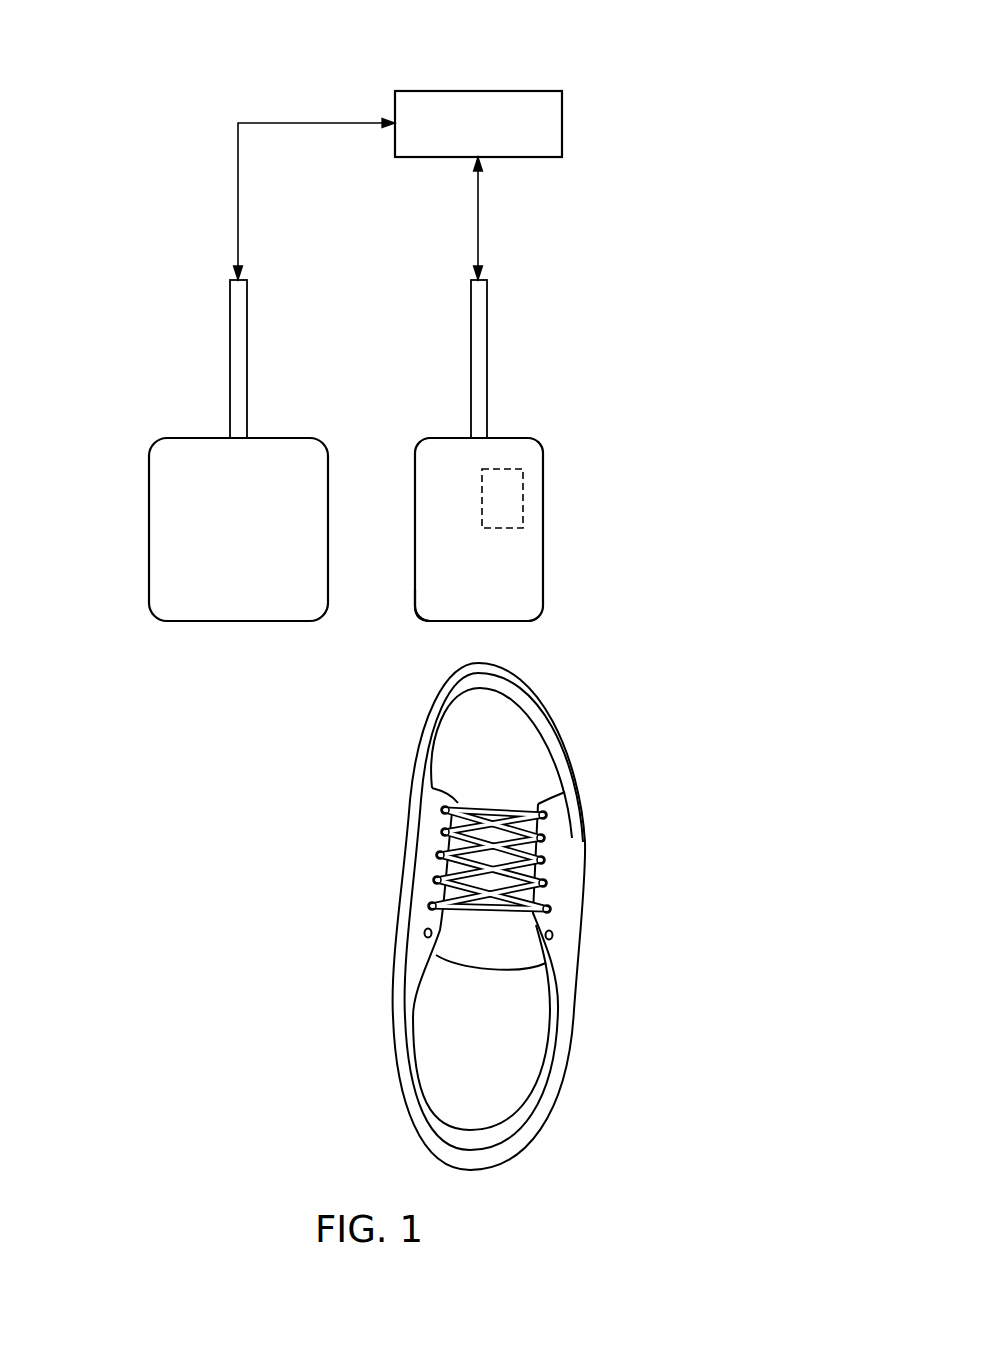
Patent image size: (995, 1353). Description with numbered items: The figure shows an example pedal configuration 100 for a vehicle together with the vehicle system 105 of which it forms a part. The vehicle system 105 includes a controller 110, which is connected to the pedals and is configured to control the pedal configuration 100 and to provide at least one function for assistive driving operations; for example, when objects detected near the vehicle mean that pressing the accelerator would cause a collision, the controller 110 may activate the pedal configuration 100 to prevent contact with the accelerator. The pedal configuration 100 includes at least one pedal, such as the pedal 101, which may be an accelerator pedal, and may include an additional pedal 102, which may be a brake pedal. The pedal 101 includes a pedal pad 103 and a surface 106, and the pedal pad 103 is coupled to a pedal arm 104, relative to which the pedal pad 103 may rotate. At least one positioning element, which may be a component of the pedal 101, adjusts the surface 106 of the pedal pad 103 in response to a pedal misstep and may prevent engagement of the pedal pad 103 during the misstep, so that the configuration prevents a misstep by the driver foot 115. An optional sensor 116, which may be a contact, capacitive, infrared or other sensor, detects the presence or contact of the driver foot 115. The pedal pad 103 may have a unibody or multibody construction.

The pedal configuration 100 is at (671, 318).
The vehicle system 105 is at (101, 158).
The controller 110 is at (562, 122).
The pedal 102 is at (183, 437).
The pedal 101 is at (440, 437).
The pedal arm 104 is at (487, 359).
The sensor 116 is at (543, 463).
The surface 106 is at (525, 580).
The pedal pad 103 is at (428, 609).
The driver foot 115 is at (585, 840).